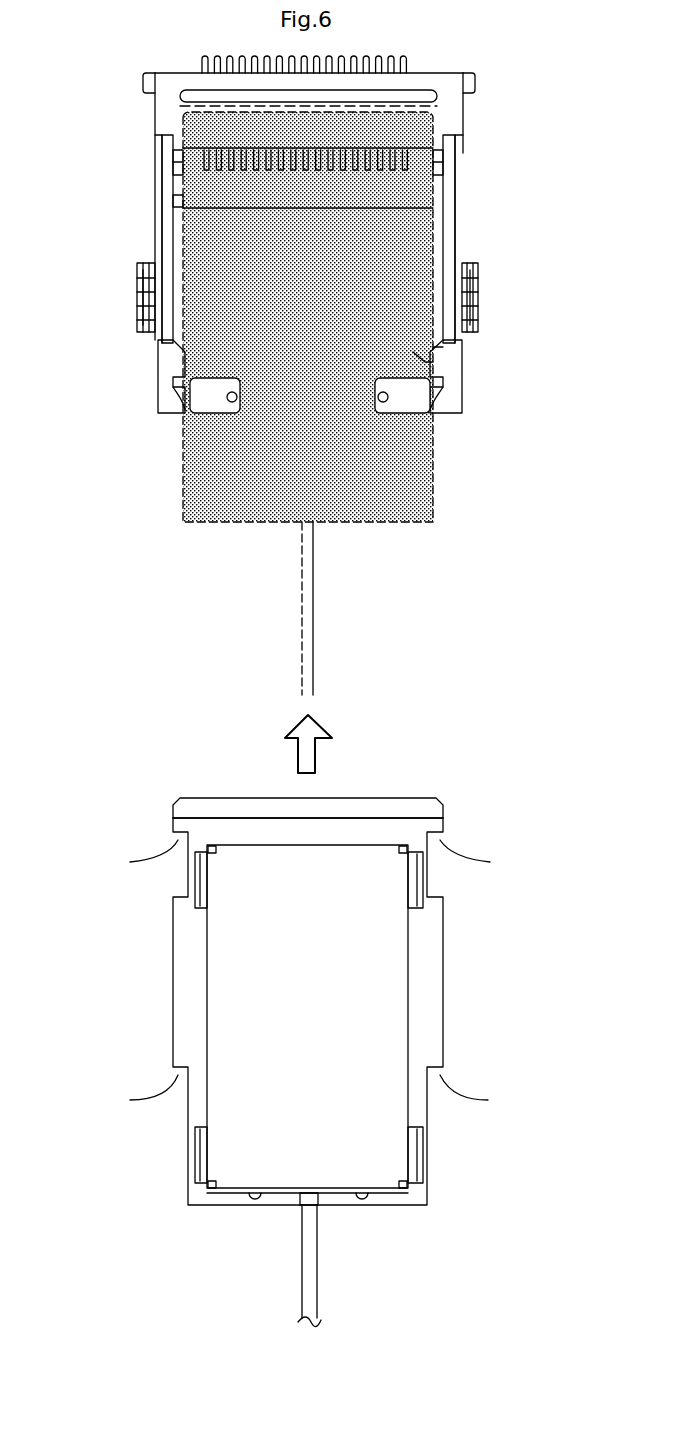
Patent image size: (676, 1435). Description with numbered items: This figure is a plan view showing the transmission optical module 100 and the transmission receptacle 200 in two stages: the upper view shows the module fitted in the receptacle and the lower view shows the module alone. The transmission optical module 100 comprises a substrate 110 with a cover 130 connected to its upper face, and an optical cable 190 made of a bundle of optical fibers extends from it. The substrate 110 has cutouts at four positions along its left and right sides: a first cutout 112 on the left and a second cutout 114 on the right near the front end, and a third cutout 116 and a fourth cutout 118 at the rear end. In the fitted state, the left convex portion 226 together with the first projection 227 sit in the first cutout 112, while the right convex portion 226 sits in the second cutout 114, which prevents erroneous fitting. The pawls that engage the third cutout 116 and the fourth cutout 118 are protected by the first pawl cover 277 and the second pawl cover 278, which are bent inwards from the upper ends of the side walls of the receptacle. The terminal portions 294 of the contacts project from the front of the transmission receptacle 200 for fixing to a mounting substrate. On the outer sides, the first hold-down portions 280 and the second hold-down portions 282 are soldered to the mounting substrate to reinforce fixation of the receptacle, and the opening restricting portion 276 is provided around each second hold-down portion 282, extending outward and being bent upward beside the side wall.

The transmission optical module 100 is at (440, 475).
The substrate 110 is at (422, 960).
The first cutout 112 is at (152, 158).
The second cutout 114 is at (470, 158).
The third cutout 116 is at (166, 405).
The fourth cutout 118 is at (455, 405).
The cover 130 is at (275, 1020).
The optical cable 190 is at (314, 642).
The transmission receptacle 200 is at (470, 118).
The convex portion 226 is at (172, 163).
The first projection 227 is at (172, 200).
The opening restricting portion 276 is at (138, 296).
The first pawl cover 277 is at (442, 348).
The second pawl cover 278 is at (181, 412).
The first hold-down portion 280 is at (143, 83).
The second hold-down portion 282 is at (148, 307).
The terminal portion 294 is at (198, 60).